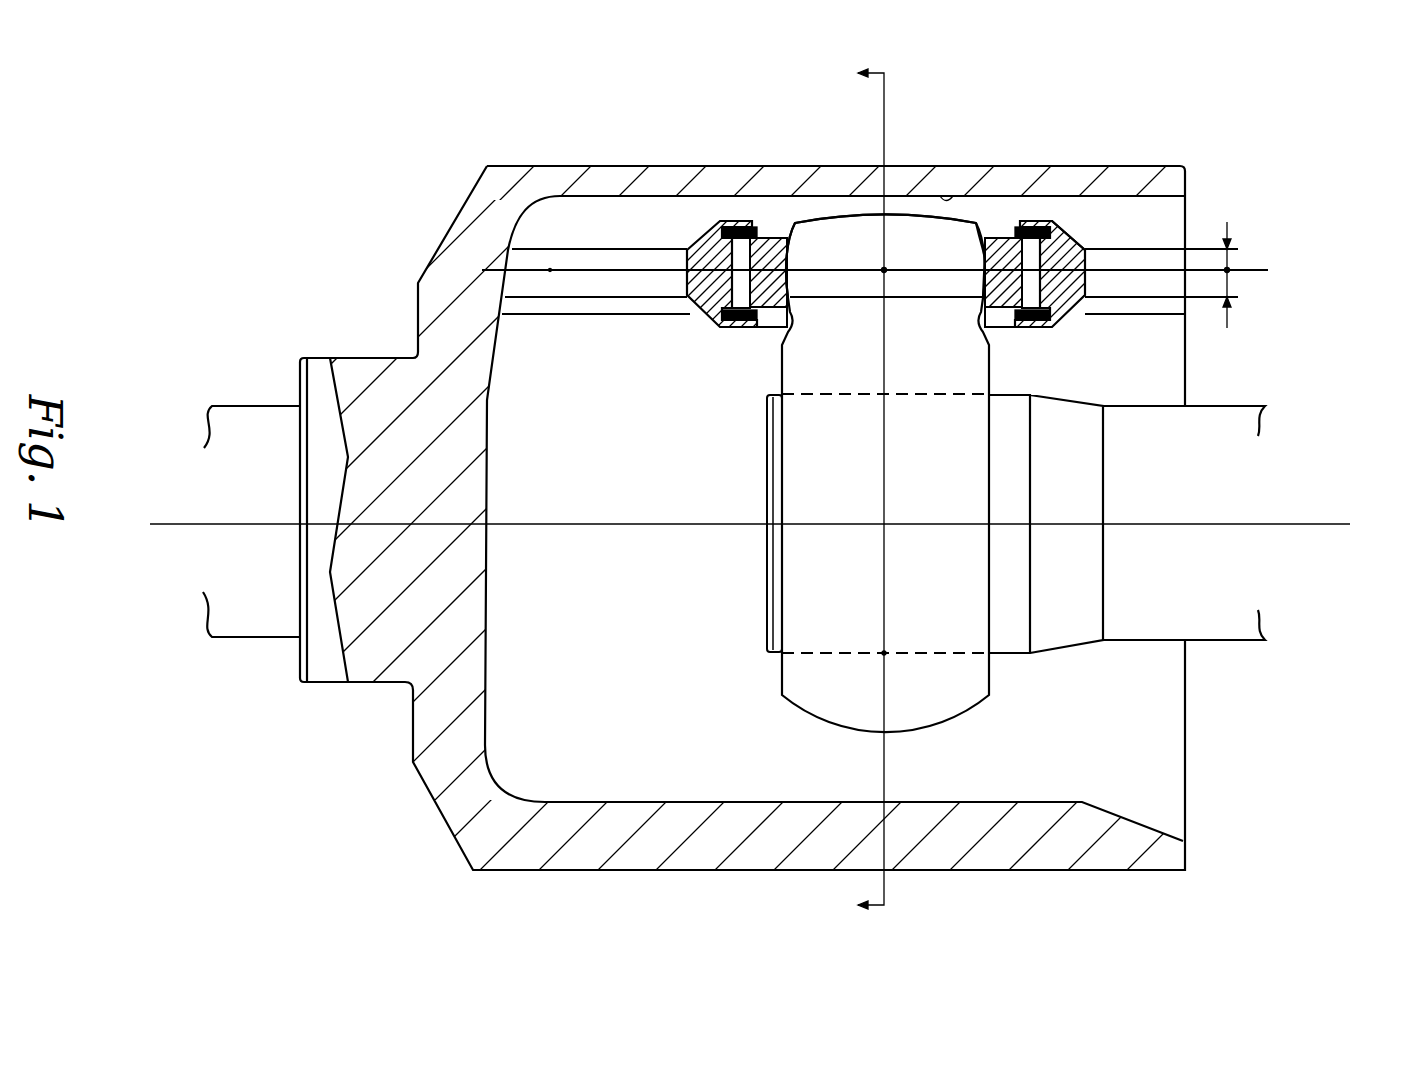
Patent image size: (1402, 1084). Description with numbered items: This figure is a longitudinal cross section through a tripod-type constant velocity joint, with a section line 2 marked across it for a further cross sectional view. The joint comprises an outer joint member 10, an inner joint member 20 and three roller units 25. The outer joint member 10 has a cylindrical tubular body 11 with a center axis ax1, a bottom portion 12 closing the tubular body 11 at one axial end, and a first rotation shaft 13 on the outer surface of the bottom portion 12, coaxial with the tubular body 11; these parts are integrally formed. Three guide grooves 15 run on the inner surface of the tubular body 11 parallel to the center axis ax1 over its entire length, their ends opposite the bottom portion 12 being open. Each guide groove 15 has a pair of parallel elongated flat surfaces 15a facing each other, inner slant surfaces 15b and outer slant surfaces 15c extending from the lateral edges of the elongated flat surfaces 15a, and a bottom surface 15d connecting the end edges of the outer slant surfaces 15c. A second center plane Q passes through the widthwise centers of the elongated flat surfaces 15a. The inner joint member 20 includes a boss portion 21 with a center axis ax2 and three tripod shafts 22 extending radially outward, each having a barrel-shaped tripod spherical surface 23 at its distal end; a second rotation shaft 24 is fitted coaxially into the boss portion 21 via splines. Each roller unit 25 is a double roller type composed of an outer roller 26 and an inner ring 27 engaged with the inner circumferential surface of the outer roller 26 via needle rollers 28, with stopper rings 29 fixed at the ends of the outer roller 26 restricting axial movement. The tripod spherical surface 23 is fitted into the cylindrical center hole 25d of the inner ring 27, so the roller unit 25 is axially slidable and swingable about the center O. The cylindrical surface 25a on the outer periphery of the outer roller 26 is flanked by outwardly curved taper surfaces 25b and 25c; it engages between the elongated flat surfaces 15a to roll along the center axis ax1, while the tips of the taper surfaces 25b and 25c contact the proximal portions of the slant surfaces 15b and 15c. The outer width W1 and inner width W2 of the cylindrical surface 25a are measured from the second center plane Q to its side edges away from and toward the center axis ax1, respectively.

The outer joint member 10 is at (610, 160).
The tubular body 11 is at (806, 176).
The bottom portion 12 is at (448, 263).
The first rotation shaft 13 is at (242, 415).
The guide groove 15 is at (705, 190).
The elongated flat surface 15a is at (1153, 257).
The inner slant surface 15b is at (1170, 310).
The outer slant surface 15c is at (1140, 210).
The bottom surface 15d is at (943, 192).
The inner joint member 20 is at (800, 716).
The boss portion 21 is at (797, 589).
The tripod shaft 22 is at (854, 205).
The tripod spherical surface 23 is at (793, 221).
The second rotation shaft 24 is at (1236, 417).
The roller unit 25 is at (1088, 218).
The cylindrical surface 25a is at (687, 278).
The taper surface 25b is at (708, 318).
The taper surface 25c is at (714, 229).
The cylindrical center hole 25d is at (982, 310).
The outer roller 26 is at (1073, 295).
The inner ring 27 is at (1002, 238).
The needle rollers 28 is at (1082, 230).
The stopper ring 29 is at (1036, 253).
The center of tripod spherical surface O is at (884, 272).
The second center plane Q is at (550, 272).
The outer width W1 is at (1232, 262).
The inner width W2 is at (1232, 286).
The center axis ax1 is at (205, 522).
The center axis ax2 is at (1300, 524).
The section line of FIG. 2 is at (857, 490).